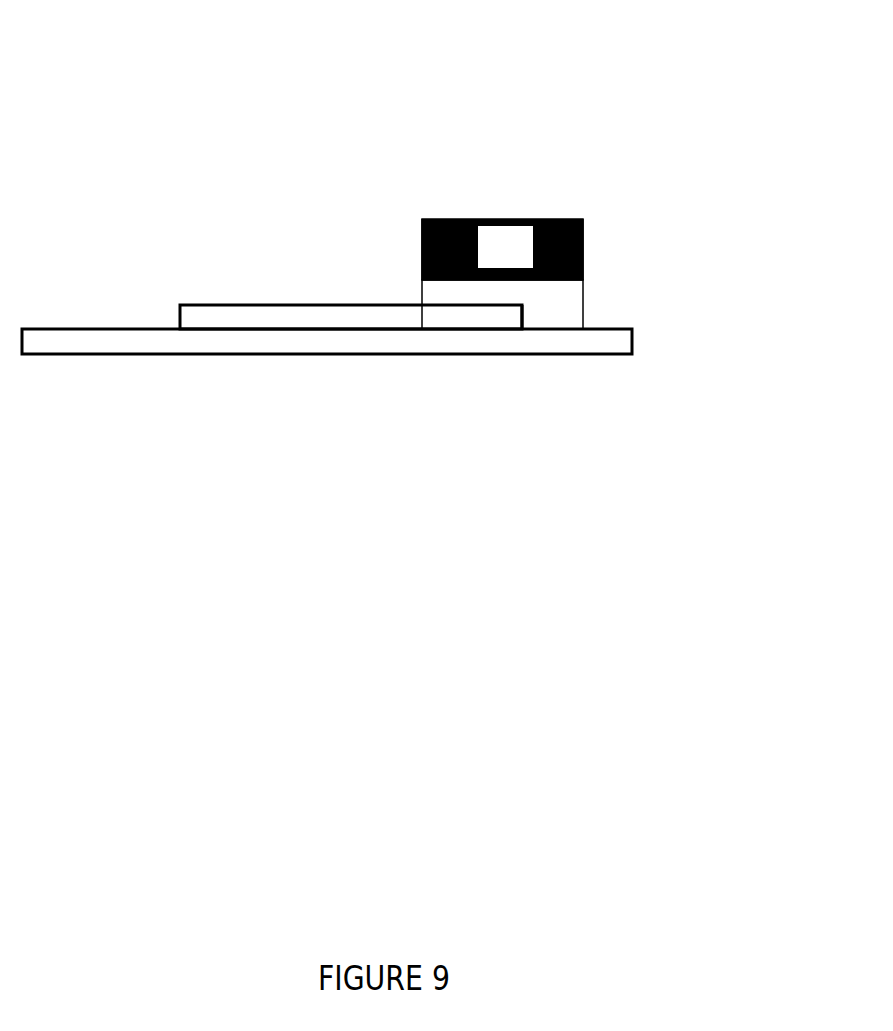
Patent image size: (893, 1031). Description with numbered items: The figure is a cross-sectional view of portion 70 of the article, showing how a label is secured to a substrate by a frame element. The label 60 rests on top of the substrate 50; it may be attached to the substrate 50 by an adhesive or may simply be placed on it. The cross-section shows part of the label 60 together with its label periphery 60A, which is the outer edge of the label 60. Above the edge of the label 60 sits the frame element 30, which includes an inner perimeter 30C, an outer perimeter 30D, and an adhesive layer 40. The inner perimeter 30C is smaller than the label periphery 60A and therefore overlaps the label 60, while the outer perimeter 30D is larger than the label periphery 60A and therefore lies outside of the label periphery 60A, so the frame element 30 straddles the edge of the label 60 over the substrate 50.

The portion 70 is at (386, 271).
The label 60 is at (315, 293).
The label periphery 60A is at (524, 318).
The substrate 50 is at (337, 357).
The adhesive layer 40 is at (560, 303).
The frame element 30 is at (502, 249).
The inner perimeter 30C is at (420, 249).
The outer perimeter 30D is at (585, 241).